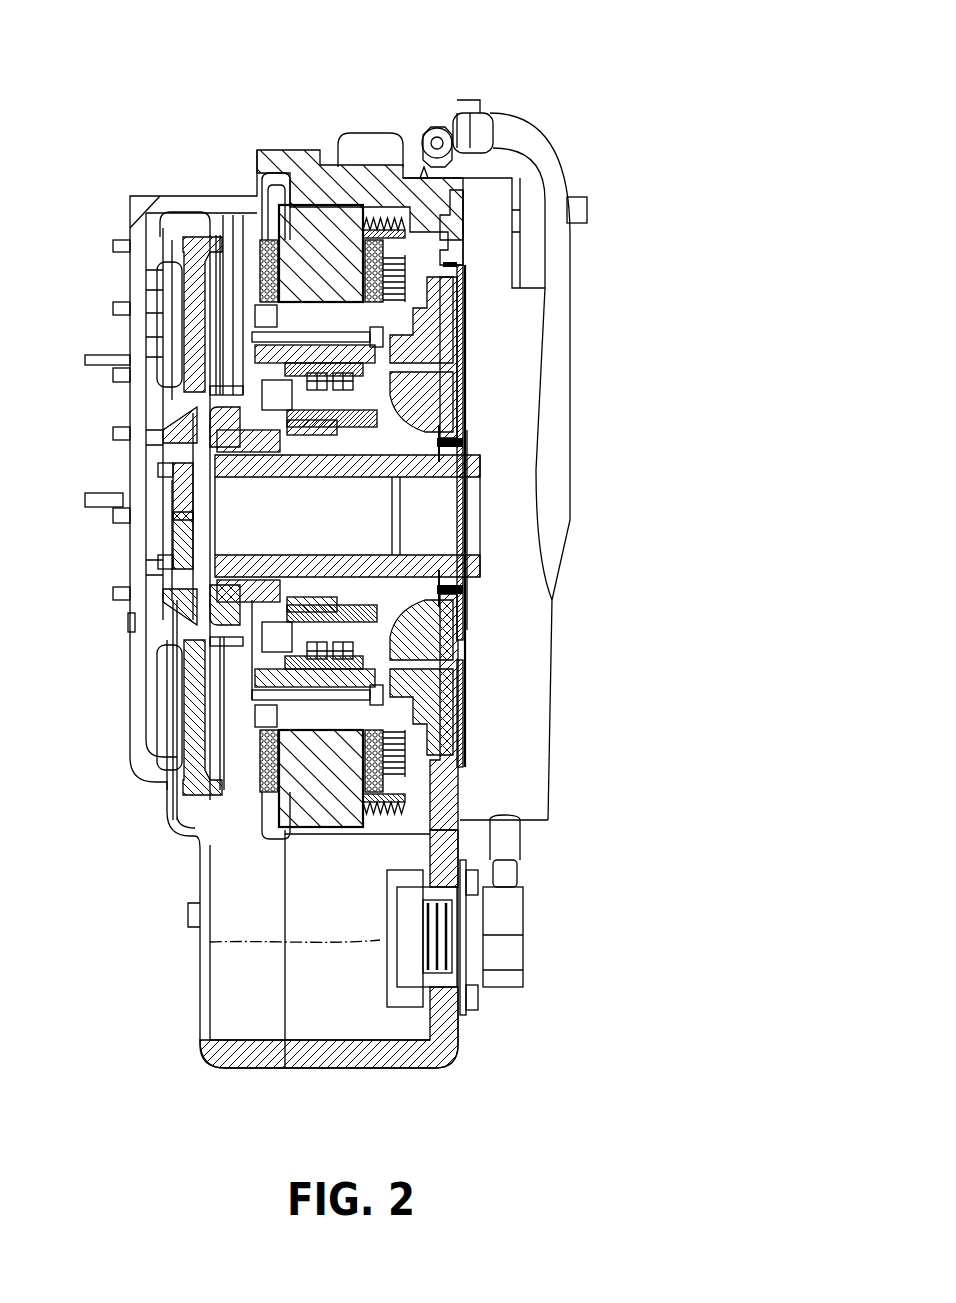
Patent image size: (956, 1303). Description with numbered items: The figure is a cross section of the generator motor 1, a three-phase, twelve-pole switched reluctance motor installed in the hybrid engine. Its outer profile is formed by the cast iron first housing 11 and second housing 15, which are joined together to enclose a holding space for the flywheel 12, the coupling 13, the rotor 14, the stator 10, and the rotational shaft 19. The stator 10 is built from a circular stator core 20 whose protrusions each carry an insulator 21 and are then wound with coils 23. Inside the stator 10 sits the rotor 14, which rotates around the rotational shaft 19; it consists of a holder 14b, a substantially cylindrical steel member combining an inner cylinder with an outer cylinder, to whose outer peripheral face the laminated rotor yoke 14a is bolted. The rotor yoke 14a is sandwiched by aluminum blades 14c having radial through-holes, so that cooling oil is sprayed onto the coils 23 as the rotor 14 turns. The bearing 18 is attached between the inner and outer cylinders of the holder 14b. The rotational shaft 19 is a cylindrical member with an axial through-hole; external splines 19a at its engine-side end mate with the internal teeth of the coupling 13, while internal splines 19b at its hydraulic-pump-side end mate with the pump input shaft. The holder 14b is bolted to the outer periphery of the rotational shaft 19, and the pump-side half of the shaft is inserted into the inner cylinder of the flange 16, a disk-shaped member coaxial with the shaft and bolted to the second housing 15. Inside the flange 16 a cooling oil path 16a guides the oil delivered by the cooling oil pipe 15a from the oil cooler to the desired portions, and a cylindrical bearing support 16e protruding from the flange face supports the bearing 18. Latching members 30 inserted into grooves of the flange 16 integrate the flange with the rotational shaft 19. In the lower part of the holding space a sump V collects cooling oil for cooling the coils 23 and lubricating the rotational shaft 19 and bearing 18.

The generator motor 1 is at (198, 72).
The stator 10 is at (330, 197).
The first housing 11 is at (152, 148).
The flywheel 12 is at (207, 227).
The coupling 13 is at (236, 370).
The rotor 14 is at (306, 295).
The rotor yoke 14a is at (253, 330).
The holder 14b is at (185, 645).
The blades 14c is at (255, 312).
The second housing 15 is at (384, 172).
The cooling oil pipe 15a is at (540, 163).
The flange 16 is at (470, 385).
The cooling oil path 16a is at (463, 305).
The bearing support 16e is at (250, 405).
The bearing 18 is at (320, 405).
The rotational shaft 19 is at (470, 472).
The external splines 19a is at (173, 452).
The internal splines 19b is at (430, 537).
The stator core 20 is at (433, 782).
The insulator 21 is at (413, 235).
The coils 23 is at (260, 198).
The latching members 30 is at (455, 443).
The sump V is at (265, 990).